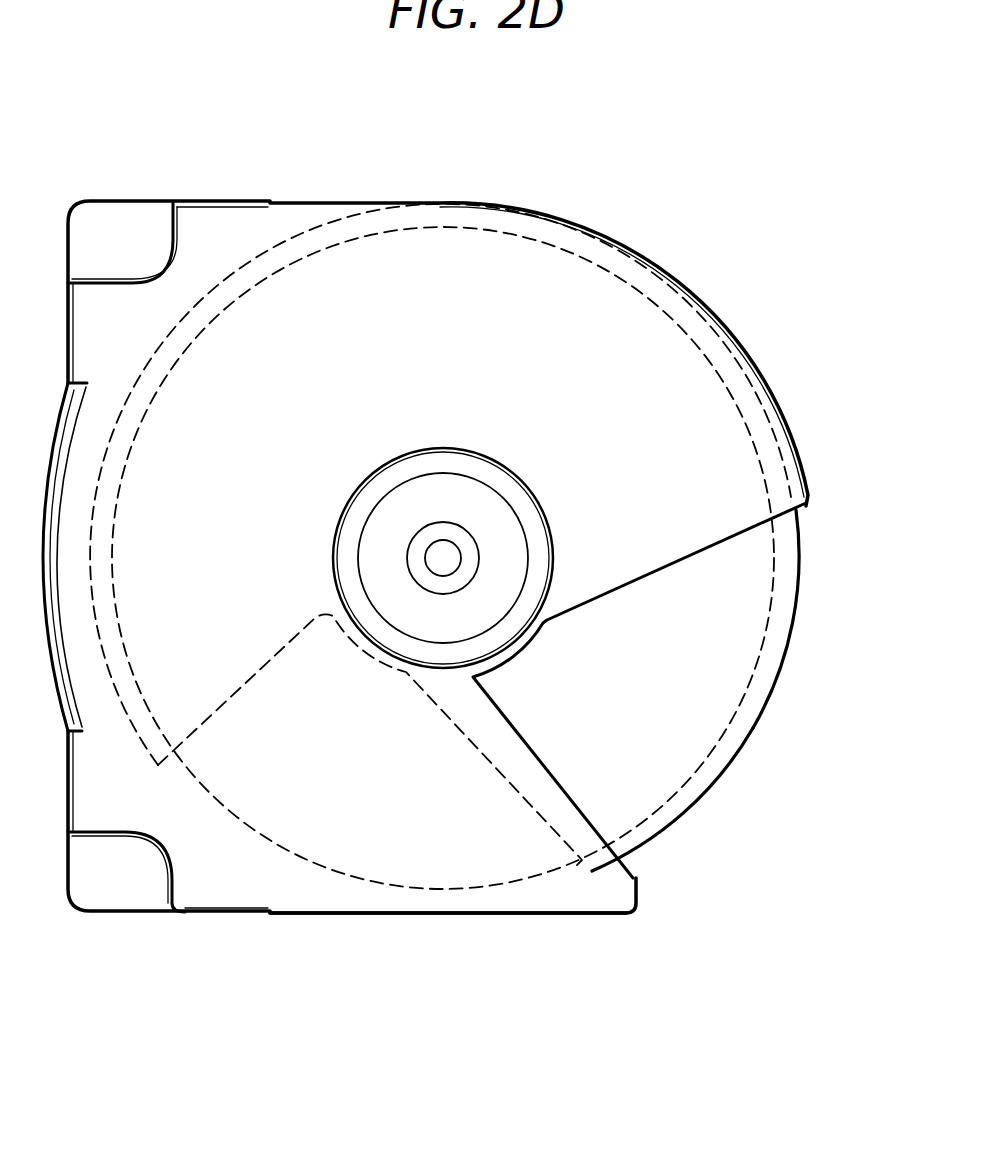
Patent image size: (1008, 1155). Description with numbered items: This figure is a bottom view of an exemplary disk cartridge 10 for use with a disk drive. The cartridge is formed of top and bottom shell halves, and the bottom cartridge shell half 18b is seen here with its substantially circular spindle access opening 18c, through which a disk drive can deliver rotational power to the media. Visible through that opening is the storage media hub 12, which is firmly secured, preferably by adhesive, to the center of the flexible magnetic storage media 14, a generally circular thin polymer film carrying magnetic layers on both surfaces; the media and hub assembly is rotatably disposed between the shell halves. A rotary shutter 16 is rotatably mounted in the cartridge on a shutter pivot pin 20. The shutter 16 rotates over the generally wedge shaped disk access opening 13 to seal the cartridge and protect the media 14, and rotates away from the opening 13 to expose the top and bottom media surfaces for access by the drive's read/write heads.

The disk cartridge 10 is at (866, 134).
The storage media hub 12 is at (372, 492).
The disk access opening 13 is at (694, 695).
The flexible magnetic storage media 14 is at (657, 877).
The rotary shutter 16 is at (797, 580).
The bottom cartridge shell half 18b is at (282, 887).
The spindle access opening 18c is at (432, 447).
The shutter pivot pin 20 is at (449, 556).